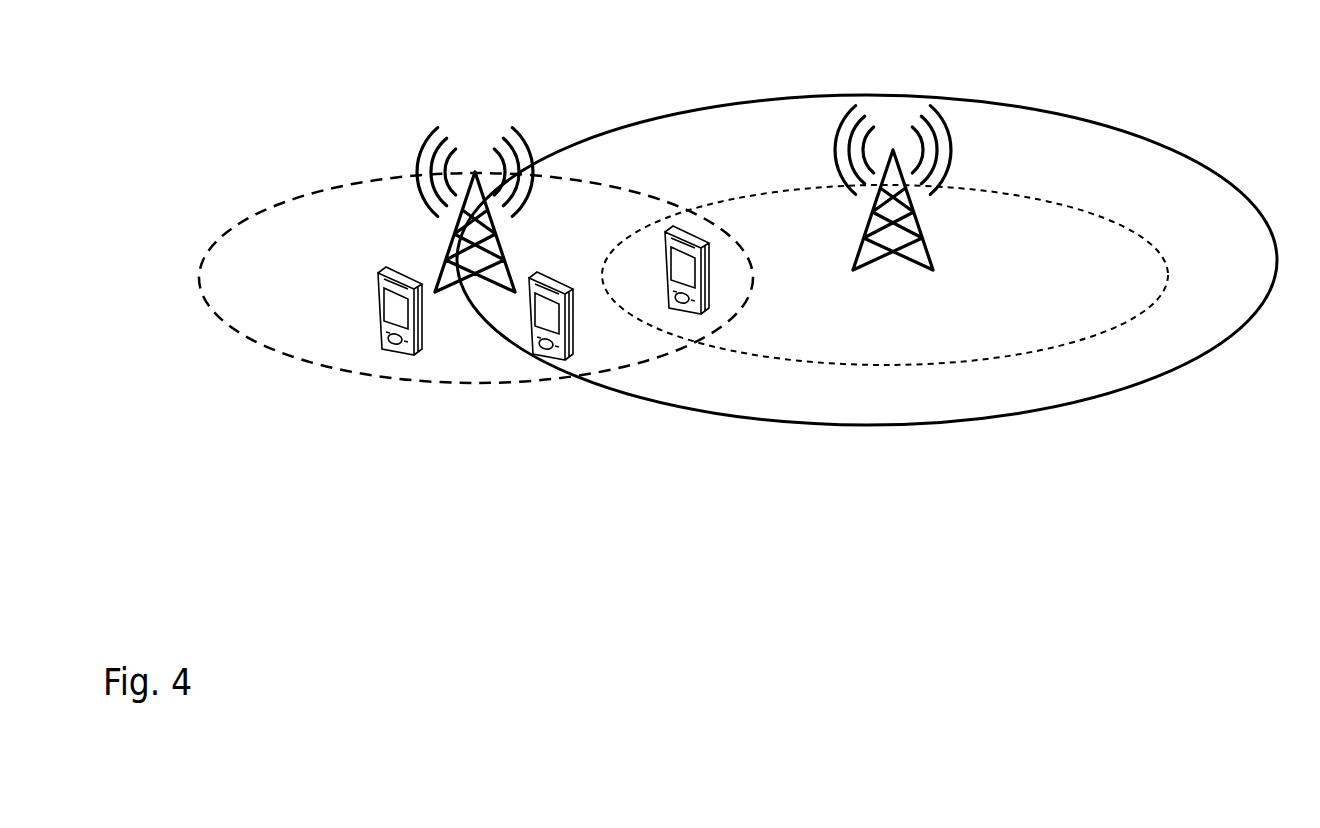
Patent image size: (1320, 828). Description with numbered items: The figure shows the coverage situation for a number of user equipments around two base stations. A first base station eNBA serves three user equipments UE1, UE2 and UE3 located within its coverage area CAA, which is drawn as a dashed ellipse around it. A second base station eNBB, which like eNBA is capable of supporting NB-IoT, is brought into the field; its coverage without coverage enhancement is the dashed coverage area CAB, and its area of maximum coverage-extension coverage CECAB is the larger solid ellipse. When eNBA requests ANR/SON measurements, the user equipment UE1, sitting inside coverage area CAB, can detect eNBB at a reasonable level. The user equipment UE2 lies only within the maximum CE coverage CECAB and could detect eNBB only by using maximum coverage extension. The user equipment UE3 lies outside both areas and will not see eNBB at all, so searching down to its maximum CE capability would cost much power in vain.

The base station eNBA is at (411, 204).
The base station eNBB is at (912, 153).
The coverage area CAA is at (476, 278).
The coverage area CAB is at (885, 275).
The area of maximum CE coverage CECAB is at (877, 264).
The user equipment UE1 is at (715, 274).
The user equipment UE2 is at (549, 341).
The user equipment UE3 is at (401, 339).